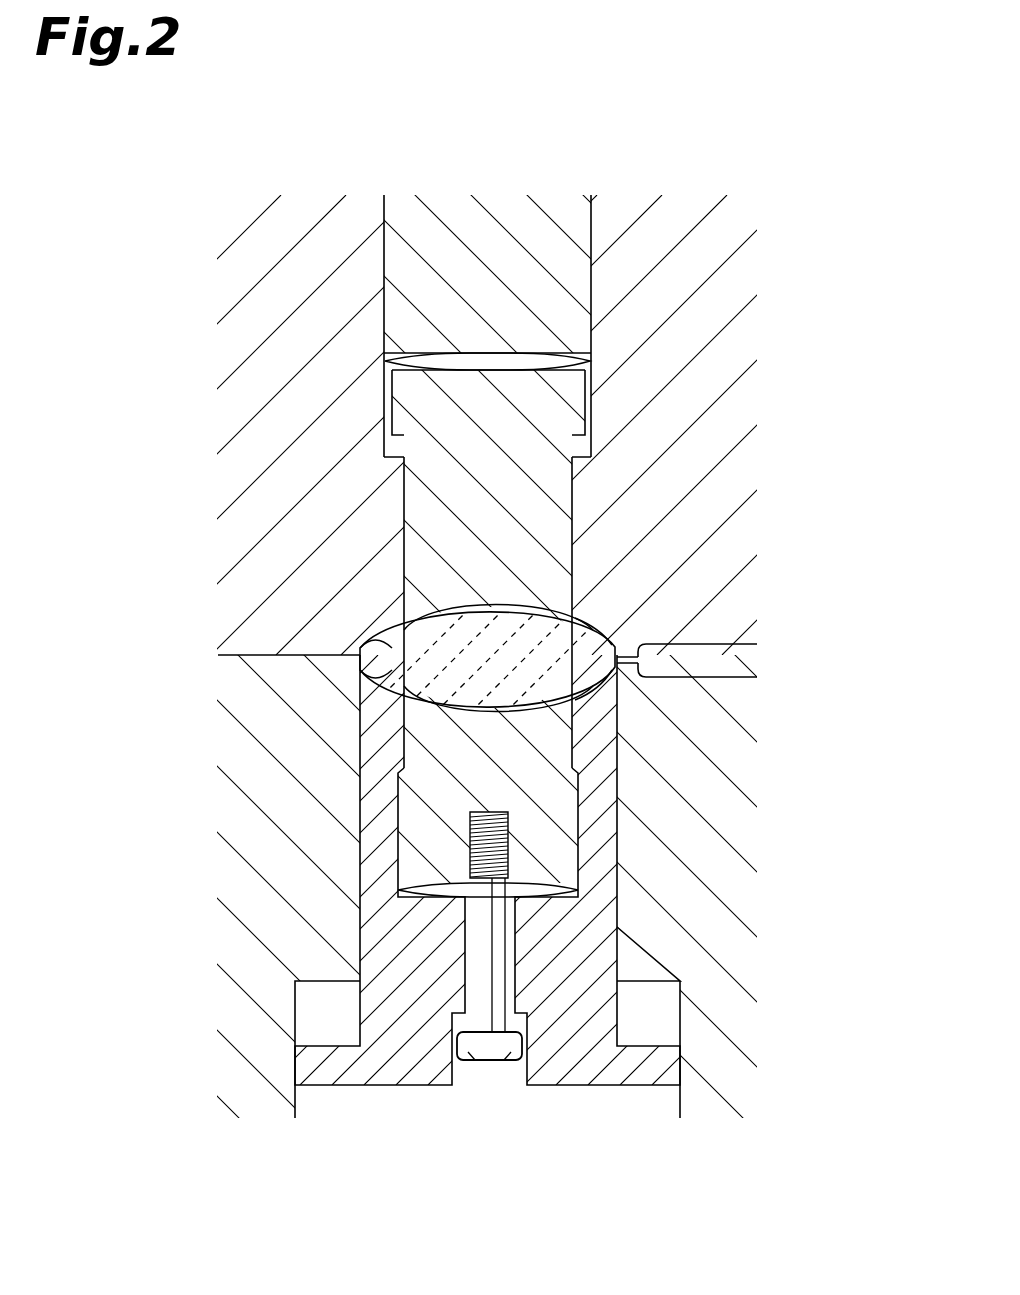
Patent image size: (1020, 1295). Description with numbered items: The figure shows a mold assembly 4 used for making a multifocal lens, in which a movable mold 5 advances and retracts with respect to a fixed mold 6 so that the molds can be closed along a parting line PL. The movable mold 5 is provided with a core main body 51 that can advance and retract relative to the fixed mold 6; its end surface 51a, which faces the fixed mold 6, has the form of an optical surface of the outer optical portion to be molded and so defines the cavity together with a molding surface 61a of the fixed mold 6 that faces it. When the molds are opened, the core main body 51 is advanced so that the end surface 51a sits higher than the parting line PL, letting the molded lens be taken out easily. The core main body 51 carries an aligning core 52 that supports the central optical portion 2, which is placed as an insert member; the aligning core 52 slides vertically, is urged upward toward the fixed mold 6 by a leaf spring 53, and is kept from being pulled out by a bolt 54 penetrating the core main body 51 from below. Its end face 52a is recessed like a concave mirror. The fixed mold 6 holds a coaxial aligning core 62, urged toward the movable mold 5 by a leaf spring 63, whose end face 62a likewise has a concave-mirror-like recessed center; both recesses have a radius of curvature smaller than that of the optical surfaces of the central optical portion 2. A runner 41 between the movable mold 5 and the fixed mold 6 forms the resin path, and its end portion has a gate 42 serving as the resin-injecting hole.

The central optical portion 2 is at (430, 708).
The mold assembly 4 is at (864, 204).
The movable mold 5 is at (738, 897).
The fixed mold 6 is at (743, 343).
The runner 41 is at (748, 663).
The gate 42 is at (633, 652).
The core main body 51 is at (375, 835).
The end surface 51a is at (455, 685).
The aligning core 52 is at (557, 837).
The end face 52a is at (612, 692).
The leaf spring 53 is at (407, 893).
The bolt 54 is at (495, 1018).
The molding surface 61a is at (410, 632).
The aligning core 62 is at (415, 495).
The end face 62a is at (600, 630).
The leaf spring 63 is at (384, 353).
The parting line PL is at (245, 655).